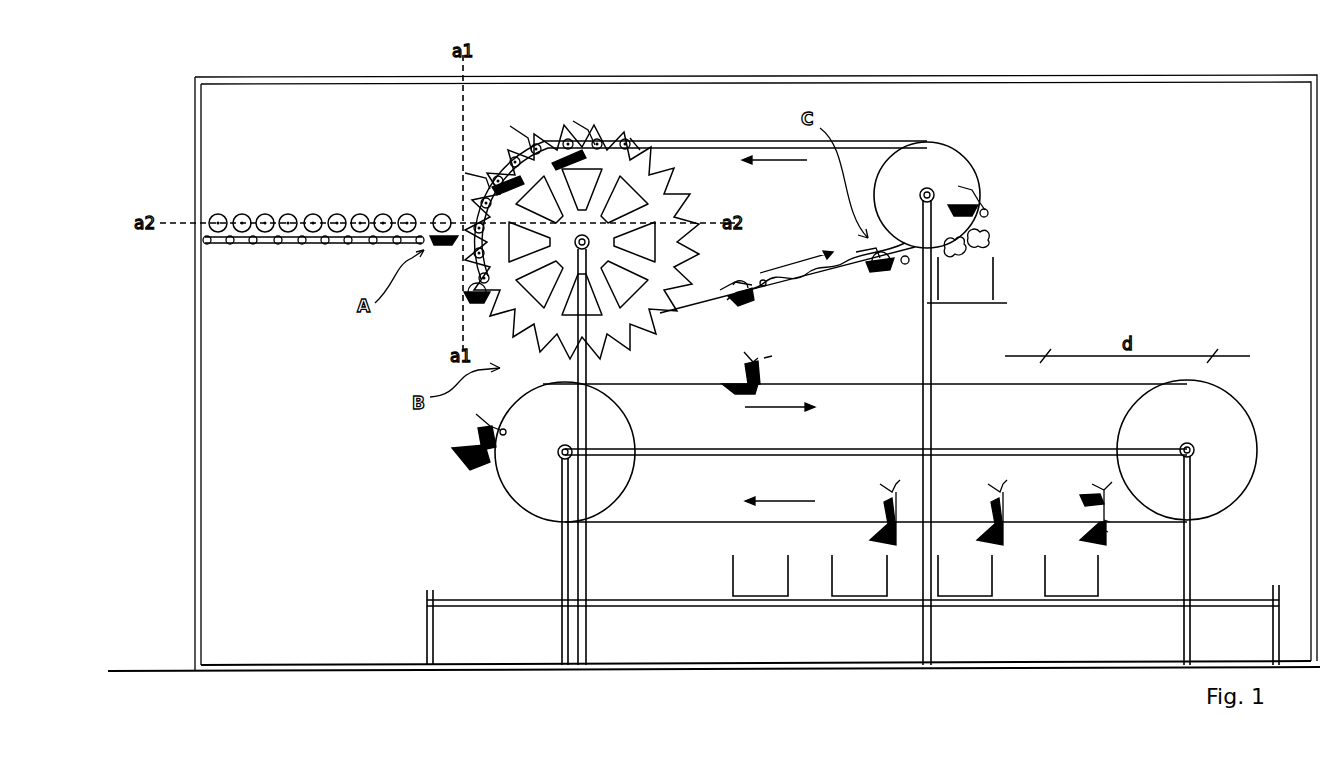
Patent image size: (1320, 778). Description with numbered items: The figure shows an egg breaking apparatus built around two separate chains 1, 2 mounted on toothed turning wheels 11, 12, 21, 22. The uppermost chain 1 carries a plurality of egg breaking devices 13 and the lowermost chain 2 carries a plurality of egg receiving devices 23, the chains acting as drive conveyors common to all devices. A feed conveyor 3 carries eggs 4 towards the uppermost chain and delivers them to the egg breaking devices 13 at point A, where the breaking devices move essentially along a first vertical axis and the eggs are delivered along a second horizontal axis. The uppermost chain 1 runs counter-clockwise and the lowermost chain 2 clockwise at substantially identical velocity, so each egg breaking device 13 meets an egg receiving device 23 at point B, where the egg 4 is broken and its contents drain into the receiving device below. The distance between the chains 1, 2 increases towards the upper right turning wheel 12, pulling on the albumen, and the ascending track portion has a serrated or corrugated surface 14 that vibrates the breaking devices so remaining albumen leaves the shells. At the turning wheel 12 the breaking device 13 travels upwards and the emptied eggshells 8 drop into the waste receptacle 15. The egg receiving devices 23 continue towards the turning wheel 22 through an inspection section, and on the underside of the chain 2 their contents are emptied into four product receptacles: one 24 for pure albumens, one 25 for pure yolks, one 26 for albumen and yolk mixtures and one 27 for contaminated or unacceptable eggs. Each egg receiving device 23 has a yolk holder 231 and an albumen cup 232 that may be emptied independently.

The uppermost chain 1 is at (876, 353).
The lowermost chain 2 is at (853, 462).
The feed conveyor 3 is at (347, 243).
The egg 4 is at (315, 220).
The emptied eggshell 8 is at (990, 232).
The toothed turning wheel 11 is at (660, 160).
The upper right turning wheel 12 is at (945, 152).
The egg breaking device 13 is at (470, 298).
The serrated or corrugated surface 14 is at (815, 290).
The waste receptacle 15 is at (1000, 280).
The toothed turning wheel 21 is at (527, 485).
The turning wheel 22 is at (1240, 420).
The egg receiving device 23 is at (470, 465).
The product receptacle for pure albumens 24 is at (1085, 598).
The product receptacle for pure yolks 25 is at (978, 598).
The product receptacle for albumen and yolk mixtures 26 is at (868, 598).
The product receptacle for contaminated eggs 27 is at (765, 598).
The yolk holder 231 is at (1110, 526).
The albumen cup 232 is at (1110, 540).